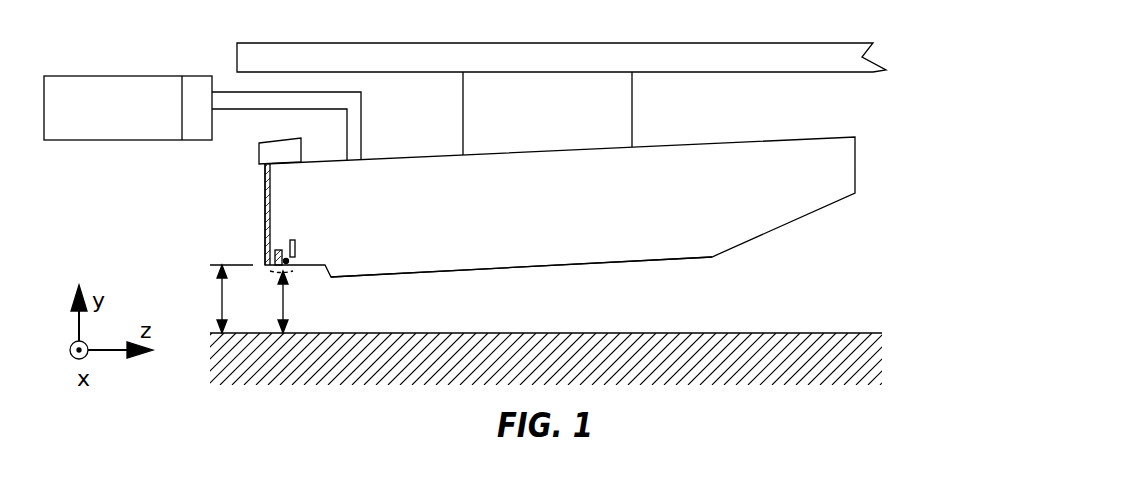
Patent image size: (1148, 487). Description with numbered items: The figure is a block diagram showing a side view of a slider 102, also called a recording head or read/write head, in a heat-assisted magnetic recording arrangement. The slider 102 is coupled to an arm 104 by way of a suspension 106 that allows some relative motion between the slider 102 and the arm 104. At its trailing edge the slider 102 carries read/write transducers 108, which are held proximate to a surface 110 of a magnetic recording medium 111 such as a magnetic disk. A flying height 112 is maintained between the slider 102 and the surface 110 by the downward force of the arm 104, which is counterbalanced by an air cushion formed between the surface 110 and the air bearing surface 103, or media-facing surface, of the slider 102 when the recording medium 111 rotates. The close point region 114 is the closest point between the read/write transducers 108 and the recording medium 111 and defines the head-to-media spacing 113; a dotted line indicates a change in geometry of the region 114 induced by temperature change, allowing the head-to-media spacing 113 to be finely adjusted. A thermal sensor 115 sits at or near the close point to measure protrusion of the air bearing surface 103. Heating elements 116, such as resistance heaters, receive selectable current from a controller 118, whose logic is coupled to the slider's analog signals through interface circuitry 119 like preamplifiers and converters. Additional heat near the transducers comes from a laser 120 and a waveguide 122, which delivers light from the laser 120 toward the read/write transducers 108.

The slider 102 is at (755, 148).
The air bearing surface 103 is at (423, 275).
The arm 104 is at (805, 52).
The suspension 106 is at (632, 107).
The read/write transducers 108 is at (280, 258).
The surface 110 is at (758, 333).
The magnetic recording medium 111 is at (771, 372).
The flying height 112 is at (214, 299).
The head-to-media spacing 113 is at (262, 302).
The close point region 114 is at (290, 272).
The thermal sensor 115 is at (288, 261).
The heating element 116 is at (291, 250).
The controller 118 is at (113, 75).
The interface circuitry 119 is at (193, 75).
The laser 120 is at (280, 147).
The waveguide 122 is at (265, 184).